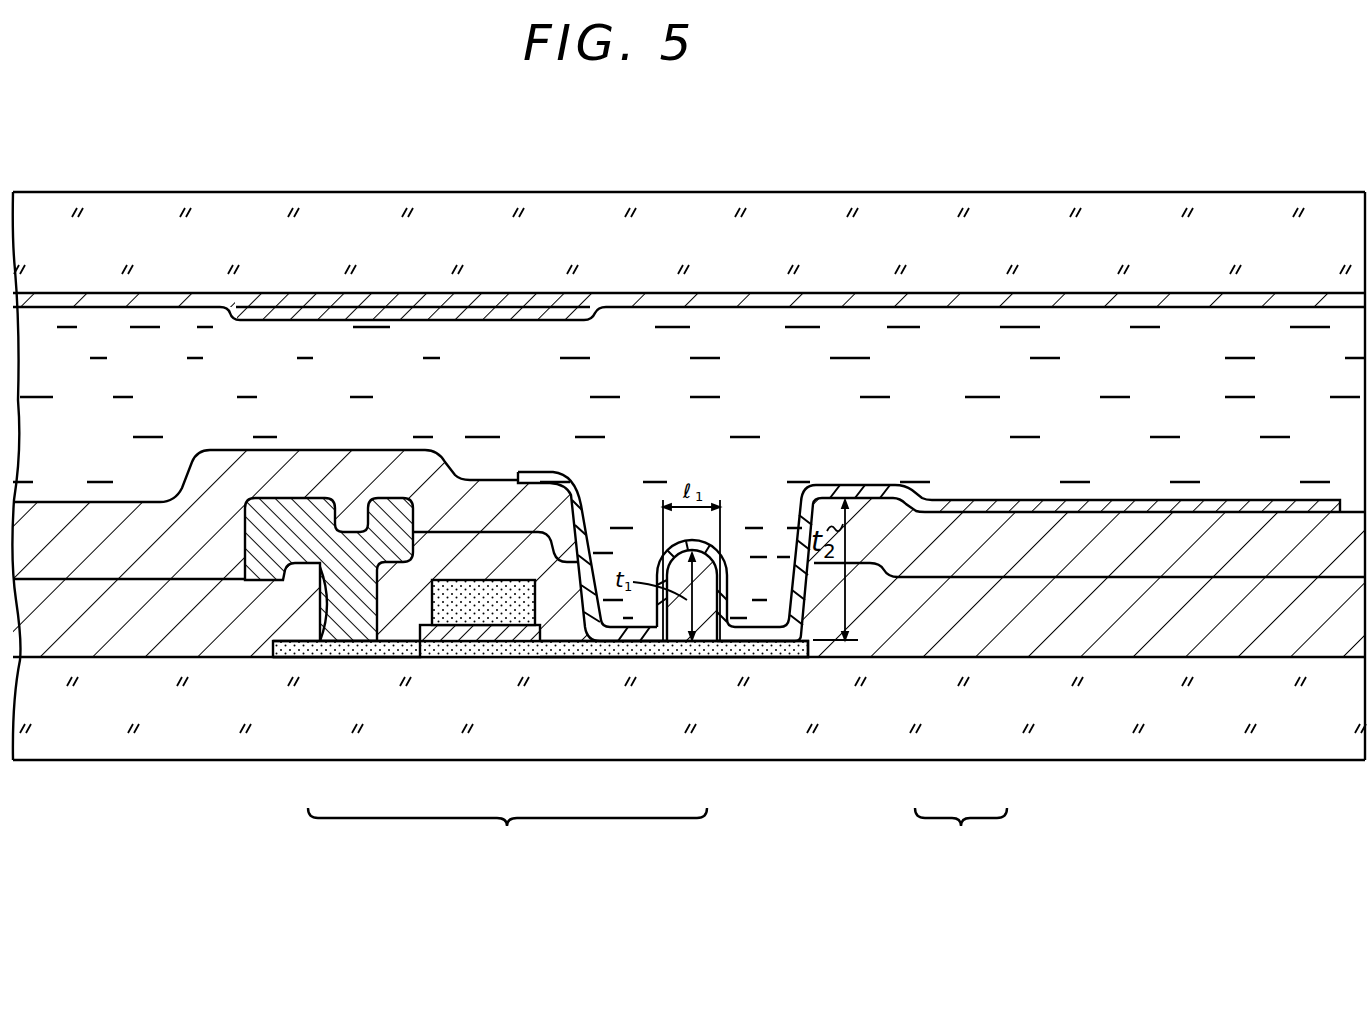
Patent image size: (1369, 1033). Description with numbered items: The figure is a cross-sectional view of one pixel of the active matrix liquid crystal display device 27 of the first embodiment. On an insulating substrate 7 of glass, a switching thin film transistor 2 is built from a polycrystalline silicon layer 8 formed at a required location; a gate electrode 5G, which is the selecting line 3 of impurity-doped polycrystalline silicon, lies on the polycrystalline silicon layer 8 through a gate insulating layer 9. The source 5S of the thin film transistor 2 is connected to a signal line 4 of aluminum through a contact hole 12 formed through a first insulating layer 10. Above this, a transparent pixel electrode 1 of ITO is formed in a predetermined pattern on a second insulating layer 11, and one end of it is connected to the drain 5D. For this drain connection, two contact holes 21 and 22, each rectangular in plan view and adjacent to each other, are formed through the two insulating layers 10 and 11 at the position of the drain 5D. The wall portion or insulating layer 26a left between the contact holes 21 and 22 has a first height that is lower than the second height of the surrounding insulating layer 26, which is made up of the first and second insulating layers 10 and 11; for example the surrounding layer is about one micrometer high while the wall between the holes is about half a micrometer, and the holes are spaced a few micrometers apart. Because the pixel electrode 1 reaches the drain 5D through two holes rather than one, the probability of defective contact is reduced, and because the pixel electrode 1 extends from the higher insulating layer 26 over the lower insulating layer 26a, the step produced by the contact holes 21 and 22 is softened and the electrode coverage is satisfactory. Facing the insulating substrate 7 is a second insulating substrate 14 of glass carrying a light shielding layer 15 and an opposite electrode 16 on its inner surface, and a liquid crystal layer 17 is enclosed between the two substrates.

The transparent pixel electrode 1 is at (1097, 500).
The switching thin film transistor 2 is at (530, 712).
The selecting line 3 is at (452, 613).
The signal line 4 is at (300, 500).
The source 5S is at (340, 655).
The gate electrode 5G is at (454, 696).
The drain 5D is at (713, 650).
The insulating substrate 7 is at (1260, 748).
The polycrystalline silicon layer 8 is at (510, 645).
The gate insulating layer 9 is at (468, 633).
The first insulating layer 10 is at (113, 650).
The second insulating layer 11 is at (70, 515).
The contact hole 12 is at (318, 612).
The insulating substrate 14 is at (1050, 215).
The light shielding layer 15 is at (487, 300).
The opposite electrode 16 is at (833, 297).
The liquid crystal layer 17 is at (1276, 330).
The contact hole 21 is at (597, 560).
The contact hole 22 is at (733, 580).
The surrounding insulating layer 26 is at (1083, 676).
The insulating layer 26a is at (712, 550).
The liquid crystal display device 27 is at (150, 860).